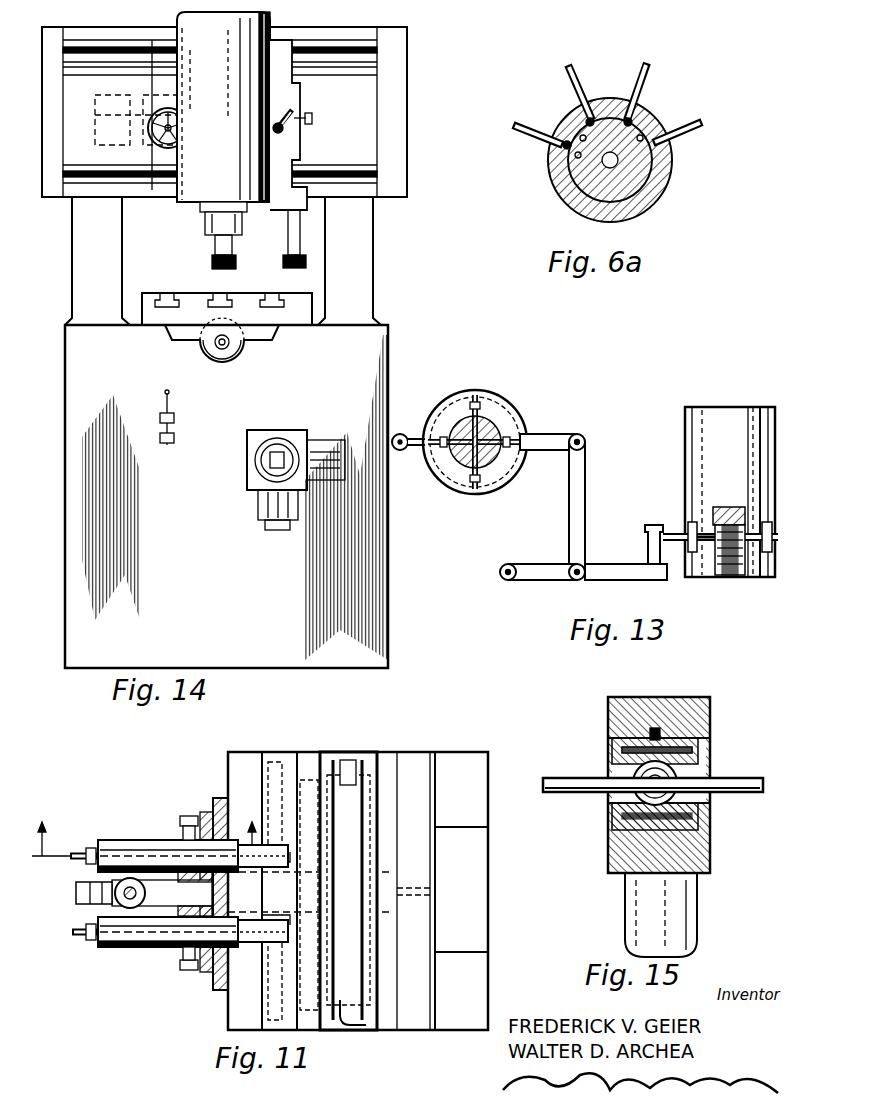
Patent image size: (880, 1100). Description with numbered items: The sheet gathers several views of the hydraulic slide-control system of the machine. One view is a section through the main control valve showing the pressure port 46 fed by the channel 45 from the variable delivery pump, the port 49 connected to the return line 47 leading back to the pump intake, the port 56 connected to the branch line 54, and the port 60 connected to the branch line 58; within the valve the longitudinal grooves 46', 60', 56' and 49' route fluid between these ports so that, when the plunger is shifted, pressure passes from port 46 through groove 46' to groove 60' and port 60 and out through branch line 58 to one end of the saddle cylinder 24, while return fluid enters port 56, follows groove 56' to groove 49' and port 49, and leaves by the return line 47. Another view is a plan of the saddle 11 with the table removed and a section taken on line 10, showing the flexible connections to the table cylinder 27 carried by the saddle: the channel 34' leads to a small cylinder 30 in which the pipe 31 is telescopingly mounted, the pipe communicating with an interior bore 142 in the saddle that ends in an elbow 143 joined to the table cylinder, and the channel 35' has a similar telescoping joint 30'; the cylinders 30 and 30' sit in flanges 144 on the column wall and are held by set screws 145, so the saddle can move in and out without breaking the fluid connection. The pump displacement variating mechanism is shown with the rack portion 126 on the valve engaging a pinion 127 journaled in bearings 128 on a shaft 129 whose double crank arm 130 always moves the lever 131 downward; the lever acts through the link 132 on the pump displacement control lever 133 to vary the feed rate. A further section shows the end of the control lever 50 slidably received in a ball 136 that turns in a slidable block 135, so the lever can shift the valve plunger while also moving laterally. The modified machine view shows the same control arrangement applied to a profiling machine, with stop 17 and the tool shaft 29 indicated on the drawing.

In FIG. 11, the section line 10 is at (144, 830).
In FIG. 11, the saddle 11 is at (410, 752).
In FIG. 14, the stop 17 is at (170, 391).
In FIG. 14, the cylinder 24 is at (240, 356).
In FIG. 14, the table cylinder 27 is at (112, 120).
In FIG. 11, the table cylinder 27 is at (360, 770).
In FIG. 11, the shaft 29 is at (345, 760).
In FIG. 11, the small cylinder 30 is at (193, 827).
In FIG. 11, the telescoping joint 30' is at (193, 948).
In FIG. 11, the pipe 31 is at (212, 798).
In FIG. 11, the channel 34' is at (94, 836).
In FIG. 11, the channel 35' is at (92, 963).
In FIG. 6A, the channel 45 is at (572, 78).
In FIG. 6A, the pressure port 46 is at (598, 95).
In FIG. 6A, the longitudinal groove 46' is at (601, 94).
In FIG. 6A, the return line 47 is at (650, 70).
In FIG. 6A, the port 49 is at (657, 103).
In FIG. 6A, the longitudinal groove 49' is at (666, 120).
In FIG. 14, the control lever 50 is at (276, 455).
In FIG. 15, the control lever 50 is at (570, 793).
In FIG. 6A, the branch line 54 is at (700, 130).
In FIG. 6A, the port 56 is at (632, 160).
In FIG. 6A, the longitudinal groove 56' is at (639, 160).
In FIG. 6A, the branch line 58 is at (525, 120).
In FIG. 6A, the port 60 is at (533, 151).
In FIG. 6A, the longitudinal groove 60' is at (534, 174).
In FIG. 13, the rack portion 126 is at (732, 572).
In FIG. 13, the pinion 127 is at (722, 508).
In FIG. 13, the bearings 128 is at (688, 525).
In FIG. 13, the shaft 129 is at (678, 545).
In FIG. 13, the double crank arm 130 is at (650, 548).
In FIG. 13, the lever 131 is at (542, 562).
In FIG. 13, the link 132 is at (586, 466).
In FIG. 13, the pump displacement control lever 133 is at (542, 430).
In FIG. 15, the slidable block 135 is at (610, 750).
In FIG. 15, the ball 136 is at (612, 755).
In FIG. 11, the interior bore 142 is at (260, 760).
In FIG. 11, the elbow 143 is at (335, 755).
In FIG. 11, the flanges 144 is at (188, 812).
In FIG. 11, the set screws 145 is at (183, 820).